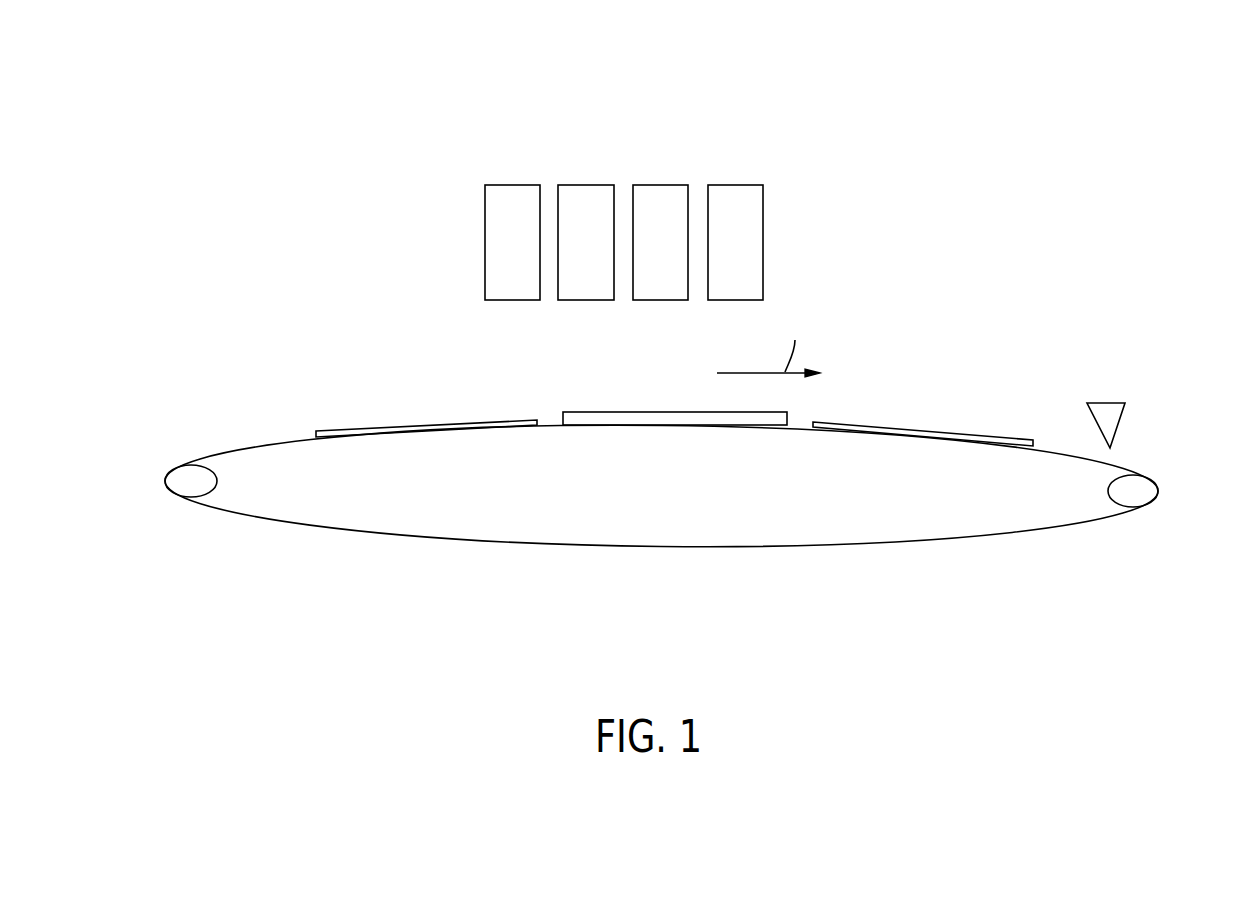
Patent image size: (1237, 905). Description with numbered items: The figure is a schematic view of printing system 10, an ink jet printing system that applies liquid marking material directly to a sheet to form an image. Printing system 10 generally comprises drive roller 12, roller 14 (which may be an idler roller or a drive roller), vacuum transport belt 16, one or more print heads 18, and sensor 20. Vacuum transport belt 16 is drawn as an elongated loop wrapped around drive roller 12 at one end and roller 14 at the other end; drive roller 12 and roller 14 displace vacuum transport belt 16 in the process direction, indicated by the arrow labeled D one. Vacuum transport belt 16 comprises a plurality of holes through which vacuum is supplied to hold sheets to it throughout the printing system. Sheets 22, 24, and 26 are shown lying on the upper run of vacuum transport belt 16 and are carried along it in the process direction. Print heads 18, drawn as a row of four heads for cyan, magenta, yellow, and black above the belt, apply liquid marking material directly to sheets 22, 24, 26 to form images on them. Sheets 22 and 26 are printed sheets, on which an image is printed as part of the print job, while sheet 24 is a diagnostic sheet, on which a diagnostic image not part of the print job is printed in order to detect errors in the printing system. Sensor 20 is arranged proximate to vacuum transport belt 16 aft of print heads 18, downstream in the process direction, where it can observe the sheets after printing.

The printing system 10 is at (300, 129).
The drive roller 12 is at (1134, 500).
The roller 14 is at (200, 475).
The vacuum transport belt 16 is at (577, 546).
The print heads 18 is at (619, 160).
The sensor 20 is at (1104, 402).
The sheet 22 is at (890, 426).
The sheet 24 is at (668, 411).
The sheet 26 is at (430, 426).